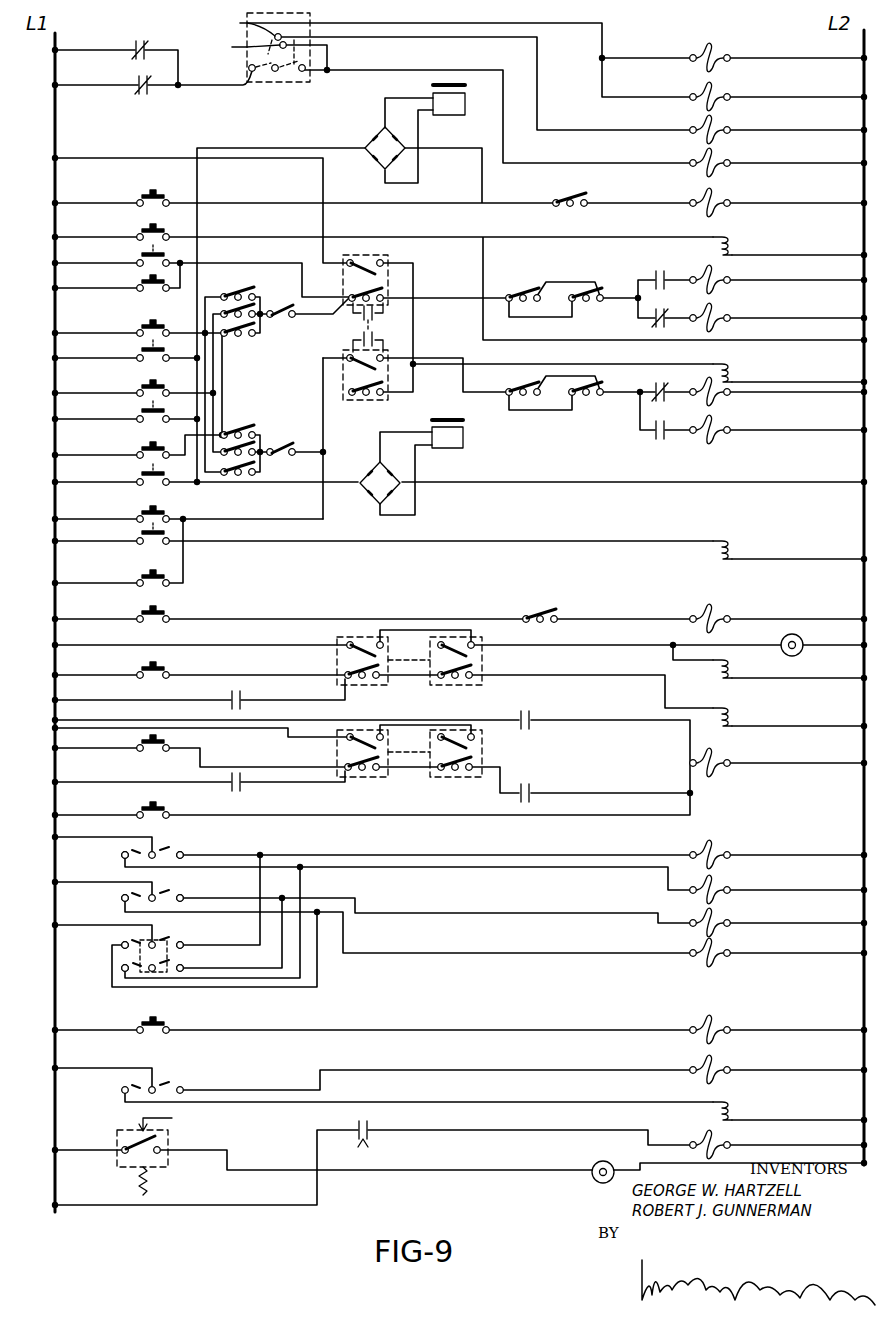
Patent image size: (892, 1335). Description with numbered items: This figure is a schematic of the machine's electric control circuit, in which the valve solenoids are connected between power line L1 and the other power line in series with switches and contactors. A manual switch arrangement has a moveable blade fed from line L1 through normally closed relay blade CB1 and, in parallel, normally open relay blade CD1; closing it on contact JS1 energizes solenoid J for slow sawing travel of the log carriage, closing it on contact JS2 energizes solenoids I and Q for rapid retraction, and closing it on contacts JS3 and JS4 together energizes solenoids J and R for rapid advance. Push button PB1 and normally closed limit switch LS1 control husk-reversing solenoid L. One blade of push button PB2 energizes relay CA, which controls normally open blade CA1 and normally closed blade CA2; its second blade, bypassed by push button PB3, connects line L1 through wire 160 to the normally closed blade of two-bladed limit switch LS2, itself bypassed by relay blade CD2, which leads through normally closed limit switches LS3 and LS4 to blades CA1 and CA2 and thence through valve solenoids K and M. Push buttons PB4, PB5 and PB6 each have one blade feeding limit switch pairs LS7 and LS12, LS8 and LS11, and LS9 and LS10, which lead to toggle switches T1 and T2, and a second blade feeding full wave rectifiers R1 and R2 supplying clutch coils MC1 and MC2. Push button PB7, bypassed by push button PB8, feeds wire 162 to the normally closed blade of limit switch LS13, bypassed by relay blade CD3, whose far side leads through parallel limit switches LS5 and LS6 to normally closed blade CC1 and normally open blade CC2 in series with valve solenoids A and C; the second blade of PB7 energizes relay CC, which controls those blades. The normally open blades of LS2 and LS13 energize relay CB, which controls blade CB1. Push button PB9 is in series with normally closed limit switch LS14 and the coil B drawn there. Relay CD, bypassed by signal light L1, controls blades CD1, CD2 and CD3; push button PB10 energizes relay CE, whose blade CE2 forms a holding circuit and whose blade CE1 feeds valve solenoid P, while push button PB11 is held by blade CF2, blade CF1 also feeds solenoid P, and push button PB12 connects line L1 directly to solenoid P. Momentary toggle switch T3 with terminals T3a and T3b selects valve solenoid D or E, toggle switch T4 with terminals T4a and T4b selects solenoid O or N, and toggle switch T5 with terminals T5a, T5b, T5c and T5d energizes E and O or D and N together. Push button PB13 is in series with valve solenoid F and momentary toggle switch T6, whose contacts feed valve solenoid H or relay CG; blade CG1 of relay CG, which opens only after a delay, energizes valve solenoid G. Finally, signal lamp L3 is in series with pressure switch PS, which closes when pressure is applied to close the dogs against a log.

The normally closed relay blade CB1 is at (139, 47).
The normally open relay blade CD1 is at (150, 88).
The contact JS1 is at (300, 72).
The contact JS2 is at (250, 72).
The contact JS3 is at (245, 26).
The contact JS4 is at (242, 44).
The full wave rectifier R1 is at (369, 143).
The clutch coil MC1 is at (440, 116).
The solenoid Q is at (729, 56).
The solenoid I is at (776, 62).
The solenoid R is at (729, 127).
The solenoid J is at (763, 146).
The solenoid L is at (729, 201).
The normally closed limit switch LS1 is at (562, 197).
The normally open push button PB1 is at (144, 192).
The push button PB2 is at (144, 227).
The push button PB3 is at (144, 282).
The push button PB4 is at (144, 322).
The push button PB5 is at (143, 383).
The push button PB6 is at (144, 445).
The push button PB7 is at (144, 509).
The push button PB8 is at (144, 572).
The push button PB9 is at (144, 608).
The normally open push button PB10 is at (144, 664).
The push button PB11 is at (144, 741).
The push button PB12 is at (144, 805).
The push button PB13 is at (148, 1017).
The wire 160 is at (231, 262).
The wire 162 is at (322, 512).
The normally closed limit switch LS7 is at (240, 293).
The normally closed limit switch LS8 is at (247, 311).
The normally closed limit switch LS9 is at (258, 338).
The toggle switch T1 is at (284, 319).
The normally closed limit switch LS10 is at (238, 430).
The normally closed limit switch LS11 is at (248, 447).
The normally closed limit switch LS12 is at (256, 467).
The toggle switch T2 is at (284, 448).
The two-bladed limit switch LS2 is at (385, 268).
The normally open relay blade CD2 is at (374, 313).
The normally open relay blade CD3 is at (374, 338).
The two-blade limit switch LS13 is at (385, 356).
The normally closed limit switch LS3 is at (514, 292).
The normally closed limit switch LS4 is at (578, 290).
The relay solenoid CA is at (735, 241).
The normally open relay blade CA1 is at (652, 272).
The normally closed relay blade CA2 is at (652, 315).
The valve solenoid K is at (729, 279).
The valve solenoid M is at (729, 318).
The relay CB is at (735, 370).
The normally closed limit switch LS5 is at (519, 386).
The normally closed limit switch LS6 is at (588, 382).
The normally open relay blade CC2 is at (652, 394).
The normally closed relay blade CC1 is at (652, 431).
The valve solenoid C is at (730, 393).
The valve solenoid A is at (730, 431).
The full wave rectifier R2 is at (366, 462).
The clutch coil MC2 is at (458, 428).
The relay CC is at (731, 544).
The normally closed limit switch LS14 is at (541, 613).
The relay coil B (reverse) B is at (712, 614).
The power line L1 is at (801, 641).
The relay CD is at (735, 666).
The relay blade CE2 is at (241, 703).
The relay blade CE1 is at (531, 723).
The relay CE is at (735, 714).
The valve solenoid P is at (729, 759).
The relay blade CF2 is at (243, 776).
The relay blade CF1 is at (535, 798).
The momentary toggle switch T3 is at (156, 851).
The terminal T3a is at (186, 852).
The terminal T3b is at (121, 854).
The momentary toggle switch T4 is at (156, 896).
The terminal T4a is at (186, 896).
The terminal T4b is at (121, 897).
The momentary toggle switch T5 is at (156, 942).
The terminal T5a is at (186, 942).
The terminal T5b is at (120, 967).
The terminal T5c is at (186, 967).
The terminal T5d is at (120, 945).
The valve solenoid E is at (712, 852).
The valve solenoid D is at (714, 888).
The valve solenoid O is at (714, 921).
The valve solenoid N is at (714, 951).
The valve solenoid F is at (713, 1028).
The momentary toggle switch T6 is at (155, 1085).
The valve solenoid H is at (713, 1068).
The relay CG is at (735, 1105).
The pressure switch PS is at (171, 1166).
The relay blade CG1 is at (372, 1133).
The valve solenoid G is at (712, 1146).
The signal lamp L3 is at (607, 1163).